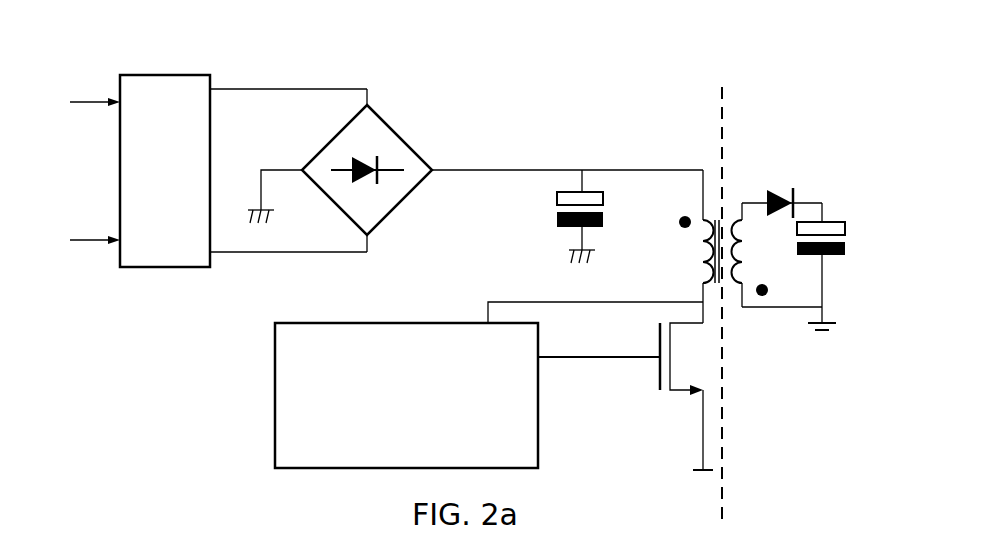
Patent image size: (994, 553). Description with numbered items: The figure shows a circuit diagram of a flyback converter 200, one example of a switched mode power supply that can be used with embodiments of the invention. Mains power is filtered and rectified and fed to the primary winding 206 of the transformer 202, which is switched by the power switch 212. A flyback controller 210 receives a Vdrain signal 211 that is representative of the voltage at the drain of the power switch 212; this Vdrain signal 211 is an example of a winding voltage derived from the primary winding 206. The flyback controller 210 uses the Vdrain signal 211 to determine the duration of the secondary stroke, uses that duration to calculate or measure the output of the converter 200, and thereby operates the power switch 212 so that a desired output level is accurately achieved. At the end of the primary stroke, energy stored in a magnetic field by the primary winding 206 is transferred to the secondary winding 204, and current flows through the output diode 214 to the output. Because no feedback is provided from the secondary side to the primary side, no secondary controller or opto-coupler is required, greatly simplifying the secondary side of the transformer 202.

The flyback converter 200 is at (551, 58).
The transformer 202 is at (738, 174).
The secondary winding 204 is at (740, 282).
The primary winding 206 is at (703, 250).
The flyback controller 210 is at (538, 427).
The Vdrain signal 211 is at (512, 302).
The power switch 212 is at (678, 393).
The output diode 214 is at (778, 183).